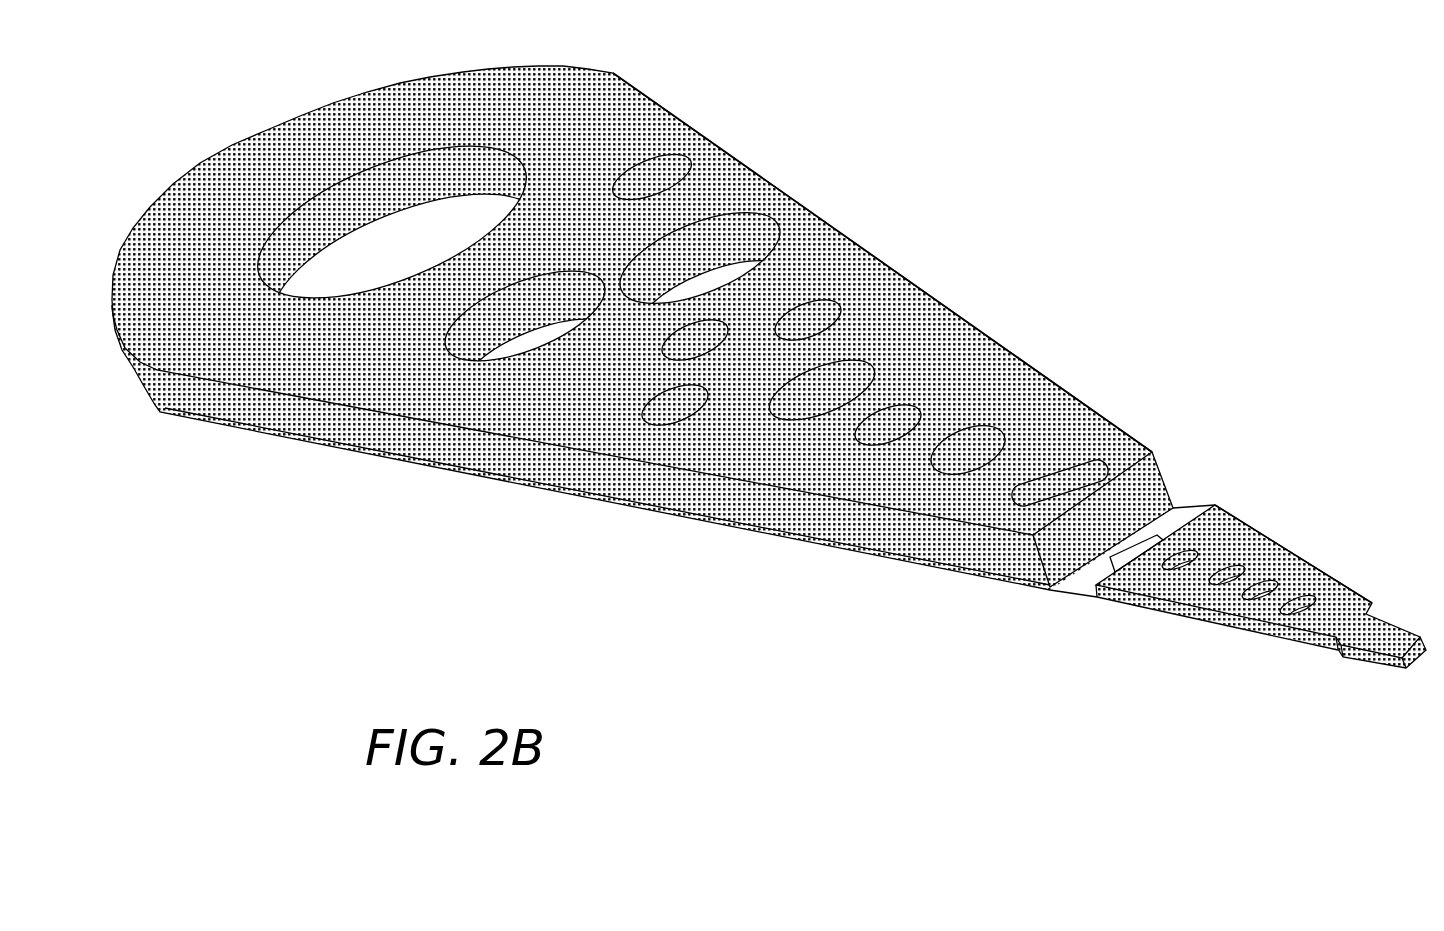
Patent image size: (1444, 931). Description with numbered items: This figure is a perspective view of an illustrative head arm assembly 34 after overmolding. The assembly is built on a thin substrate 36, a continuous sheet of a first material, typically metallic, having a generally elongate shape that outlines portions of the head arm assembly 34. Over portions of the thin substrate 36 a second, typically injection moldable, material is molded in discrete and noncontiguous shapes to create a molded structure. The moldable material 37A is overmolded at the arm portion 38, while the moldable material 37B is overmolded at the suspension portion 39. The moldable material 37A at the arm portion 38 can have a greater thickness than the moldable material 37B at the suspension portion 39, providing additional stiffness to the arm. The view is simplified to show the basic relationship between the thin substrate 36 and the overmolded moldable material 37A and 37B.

The head arm assembly 34 is at (769, 367).
The thin substrate 36 is at (1083, 578).
The moldable material 37A is at (652, 300).
The moldable material 37B is at (1261, 559).
The arm portion 38 is at (913, 282).
The suspension portion 39 is at (1283, 557).